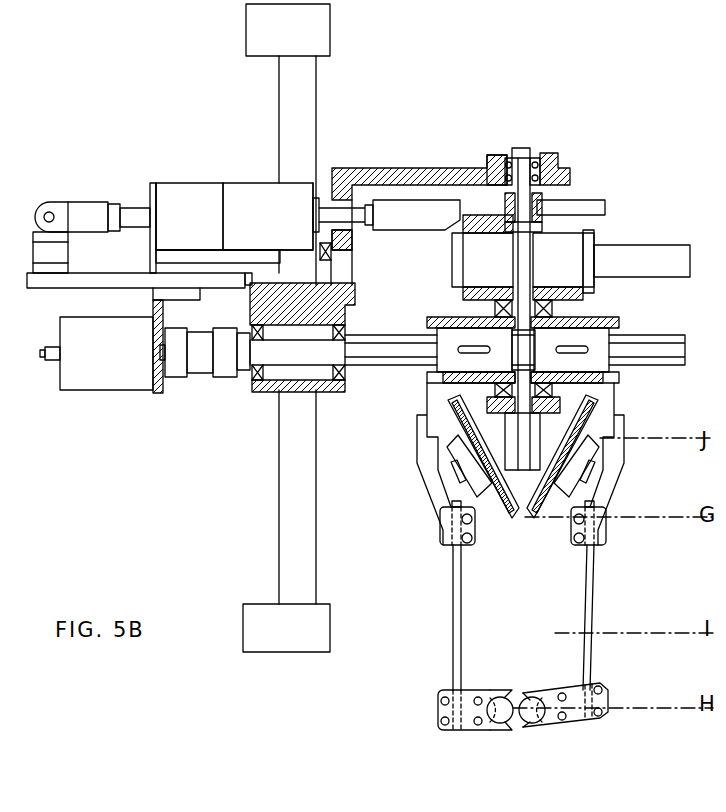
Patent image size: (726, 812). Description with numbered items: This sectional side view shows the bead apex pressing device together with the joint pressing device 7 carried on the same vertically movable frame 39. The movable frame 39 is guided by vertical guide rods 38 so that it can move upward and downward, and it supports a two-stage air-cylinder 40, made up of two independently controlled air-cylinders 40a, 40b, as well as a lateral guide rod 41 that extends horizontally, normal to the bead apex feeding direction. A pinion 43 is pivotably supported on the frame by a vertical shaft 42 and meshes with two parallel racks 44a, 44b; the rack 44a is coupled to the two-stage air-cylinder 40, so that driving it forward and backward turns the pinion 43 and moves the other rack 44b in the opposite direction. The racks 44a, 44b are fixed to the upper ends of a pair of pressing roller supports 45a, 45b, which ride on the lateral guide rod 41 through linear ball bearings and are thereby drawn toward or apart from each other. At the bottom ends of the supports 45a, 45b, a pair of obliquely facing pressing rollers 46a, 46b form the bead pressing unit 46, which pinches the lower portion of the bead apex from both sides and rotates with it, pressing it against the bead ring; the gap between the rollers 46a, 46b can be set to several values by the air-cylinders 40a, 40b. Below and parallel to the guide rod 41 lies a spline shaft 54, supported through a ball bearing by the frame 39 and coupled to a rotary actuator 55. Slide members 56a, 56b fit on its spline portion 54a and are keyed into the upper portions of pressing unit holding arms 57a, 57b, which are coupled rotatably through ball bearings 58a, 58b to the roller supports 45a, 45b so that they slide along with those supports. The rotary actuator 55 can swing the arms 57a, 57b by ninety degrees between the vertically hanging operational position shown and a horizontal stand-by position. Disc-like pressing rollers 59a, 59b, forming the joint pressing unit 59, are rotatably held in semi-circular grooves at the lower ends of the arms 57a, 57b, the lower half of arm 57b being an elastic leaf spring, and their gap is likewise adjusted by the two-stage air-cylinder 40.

The joint pressing device 7 is at (522, 680).
The vertical guide rods 38 is at (278, 105).
The movable frame 39 is at (262, 385).
The two-stage air-cylinder 40 is at (248, 152).
The air-cylinder 40a is at (185, 200).
The air-cylinder 40b is at (258, 195).
The lateral guide rod 41 is at (640, 258).
The vertical shaft 42 is at (525, 150).
The pinion 43 is at (540, 197).
The rack 44a is at (470, 210).
The rack 44b is at (590, 207).
The pressing roller support 45a is at (478, 400).
The pressing roller support 45b is at (560, 425).
The bead pressing unit 46 is at (573, 568).
The pressing roller 46a is at (512, 520).
The pressing roller 46b is at (535, 520).
The spline shaft 54 is at (373, 372).
The spline portion 54a is at (690, 322).
The rotary actuator 55 is at (123, 380).
The slide member 56a is at (448, 344).
The slide member 56b is at (590, 345).
The pressing unit holding arm 57a is at (433, 510).
The pressing unit holding arm 57b is at (605, 512).
The ball bearing 58a is at (492, 306).
The ball bearing 58b is at (555, 306).
The joint pressing unit 59 is at (577, 770).
The pressing roller 59a is at (503, 723).
The pressing roller 59b is at (535, 723).